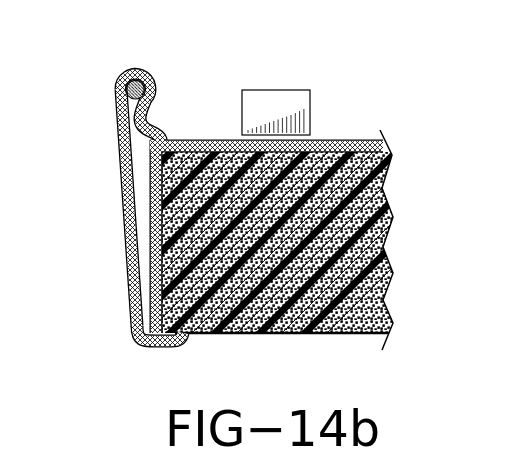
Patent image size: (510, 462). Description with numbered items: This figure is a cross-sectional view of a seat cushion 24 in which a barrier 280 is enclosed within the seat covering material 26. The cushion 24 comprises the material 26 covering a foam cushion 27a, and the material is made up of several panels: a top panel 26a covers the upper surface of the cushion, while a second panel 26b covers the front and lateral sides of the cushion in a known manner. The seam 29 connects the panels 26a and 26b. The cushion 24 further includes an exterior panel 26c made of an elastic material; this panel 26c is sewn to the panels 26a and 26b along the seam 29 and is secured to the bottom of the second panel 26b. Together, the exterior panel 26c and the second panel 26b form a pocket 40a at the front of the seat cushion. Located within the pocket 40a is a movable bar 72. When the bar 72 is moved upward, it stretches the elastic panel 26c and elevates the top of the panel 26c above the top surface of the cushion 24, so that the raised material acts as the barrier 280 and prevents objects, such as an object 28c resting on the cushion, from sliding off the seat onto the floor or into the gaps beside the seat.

The seat cushion 24 is at (255, 214).
The seat covering material 26 is at (211, 187).
The top panel 26a is at (343, 138).
The second panel 26b is at (155, 243).
The exterior panel 26c is at (132, 290).
The foam cushion 27a is at (272, 303).
The object 28c is at (280, 90).
The seam 29 is at (162, 136).
The pocket 40a is at (138, 185).
The movable bar 72 is at (128, 87).
The barrier 280 is at (103, 196).